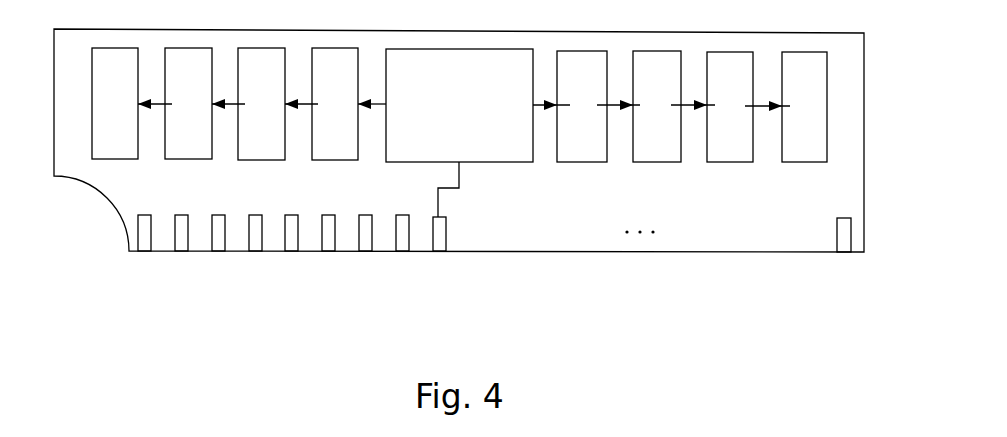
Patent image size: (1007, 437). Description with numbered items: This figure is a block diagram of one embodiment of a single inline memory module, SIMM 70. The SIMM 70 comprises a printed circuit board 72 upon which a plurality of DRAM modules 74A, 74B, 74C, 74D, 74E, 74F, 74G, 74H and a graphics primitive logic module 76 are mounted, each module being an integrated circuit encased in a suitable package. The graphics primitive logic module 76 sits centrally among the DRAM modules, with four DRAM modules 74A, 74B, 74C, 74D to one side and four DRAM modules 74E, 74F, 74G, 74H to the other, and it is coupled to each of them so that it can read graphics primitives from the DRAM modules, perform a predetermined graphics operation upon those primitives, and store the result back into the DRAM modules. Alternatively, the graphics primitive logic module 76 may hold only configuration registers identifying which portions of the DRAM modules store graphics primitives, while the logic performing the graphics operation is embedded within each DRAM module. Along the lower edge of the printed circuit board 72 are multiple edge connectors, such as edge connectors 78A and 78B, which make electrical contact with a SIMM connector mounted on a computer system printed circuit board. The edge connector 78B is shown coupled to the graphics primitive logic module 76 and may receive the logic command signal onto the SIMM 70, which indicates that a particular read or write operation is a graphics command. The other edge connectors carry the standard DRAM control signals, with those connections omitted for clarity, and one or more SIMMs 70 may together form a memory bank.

The single inline memory module (SIMM) 70 is at (269, 334).
The printed circuit board 72 is at (864, 143).
The DRAM module 74A is at (122, 159).
The DRAM module 74B is at (188, 160).
The DRAM module 74C is at (263, 160).
The DRAM module 74D is at (333, 160).
The DRAM module 74E is at (582, 162).
The DRAM module 74F is at (657, 162).
The DRAM module 74G is at (730, 162).
The DRAM module 74H is at (804, 162).
The graphics primitive logic module 76 is at (446, 150).
The edge connector 78A is at (143, 251).
The edge connector 78B is at (440, 252).